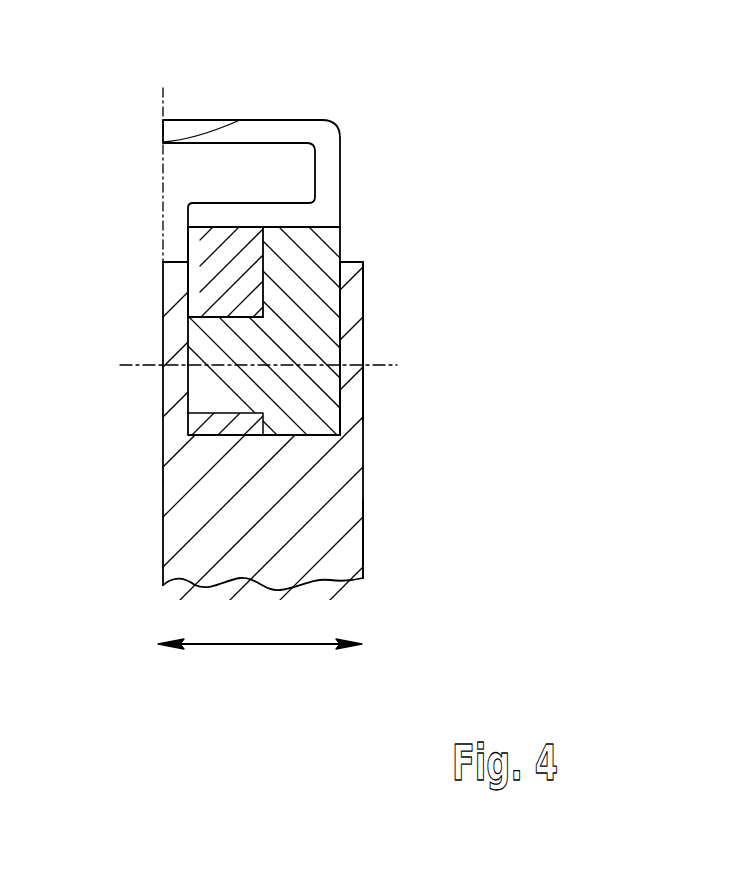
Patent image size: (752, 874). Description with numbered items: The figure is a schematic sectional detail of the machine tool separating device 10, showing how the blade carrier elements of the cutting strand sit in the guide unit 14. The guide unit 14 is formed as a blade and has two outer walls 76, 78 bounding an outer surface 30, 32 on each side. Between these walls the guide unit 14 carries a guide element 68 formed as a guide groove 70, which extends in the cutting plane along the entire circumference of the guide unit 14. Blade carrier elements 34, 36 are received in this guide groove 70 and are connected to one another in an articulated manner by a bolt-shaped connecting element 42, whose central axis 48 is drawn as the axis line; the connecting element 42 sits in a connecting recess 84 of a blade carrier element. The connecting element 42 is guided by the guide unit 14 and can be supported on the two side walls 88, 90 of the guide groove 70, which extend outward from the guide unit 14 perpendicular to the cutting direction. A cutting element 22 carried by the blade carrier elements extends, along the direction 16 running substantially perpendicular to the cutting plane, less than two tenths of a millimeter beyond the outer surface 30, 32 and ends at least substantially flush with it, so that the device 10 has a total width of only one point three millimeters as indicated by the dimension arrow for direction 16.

The machine tool separating device 10 is at (528, 137).
The guide unit 14 is at (350, 523).
The direction 16 is at (262, 645).
The cutting element 22 is at (335, 117).
The outer surface 30 is at (364, 480).
The outer surface 32 is at (161, 474).
The blade carrier element 34 is at (340, 232).
The blade carrier element 36 is at (207, 273).
The connecting element 42 is at (212, 388).
The central axis 48 is at (374, 365).
The guide element 68 is at (333, 456).
The guide groove 70 is at (333, 456).
The outer wall 76 is at (367, 560).
The outer wall 78 is at (163, 527).
The connecting recess 84 is at (190, 429).
The side wall 88 is at (340, 300).
The side wall 90 is at (192, 310).